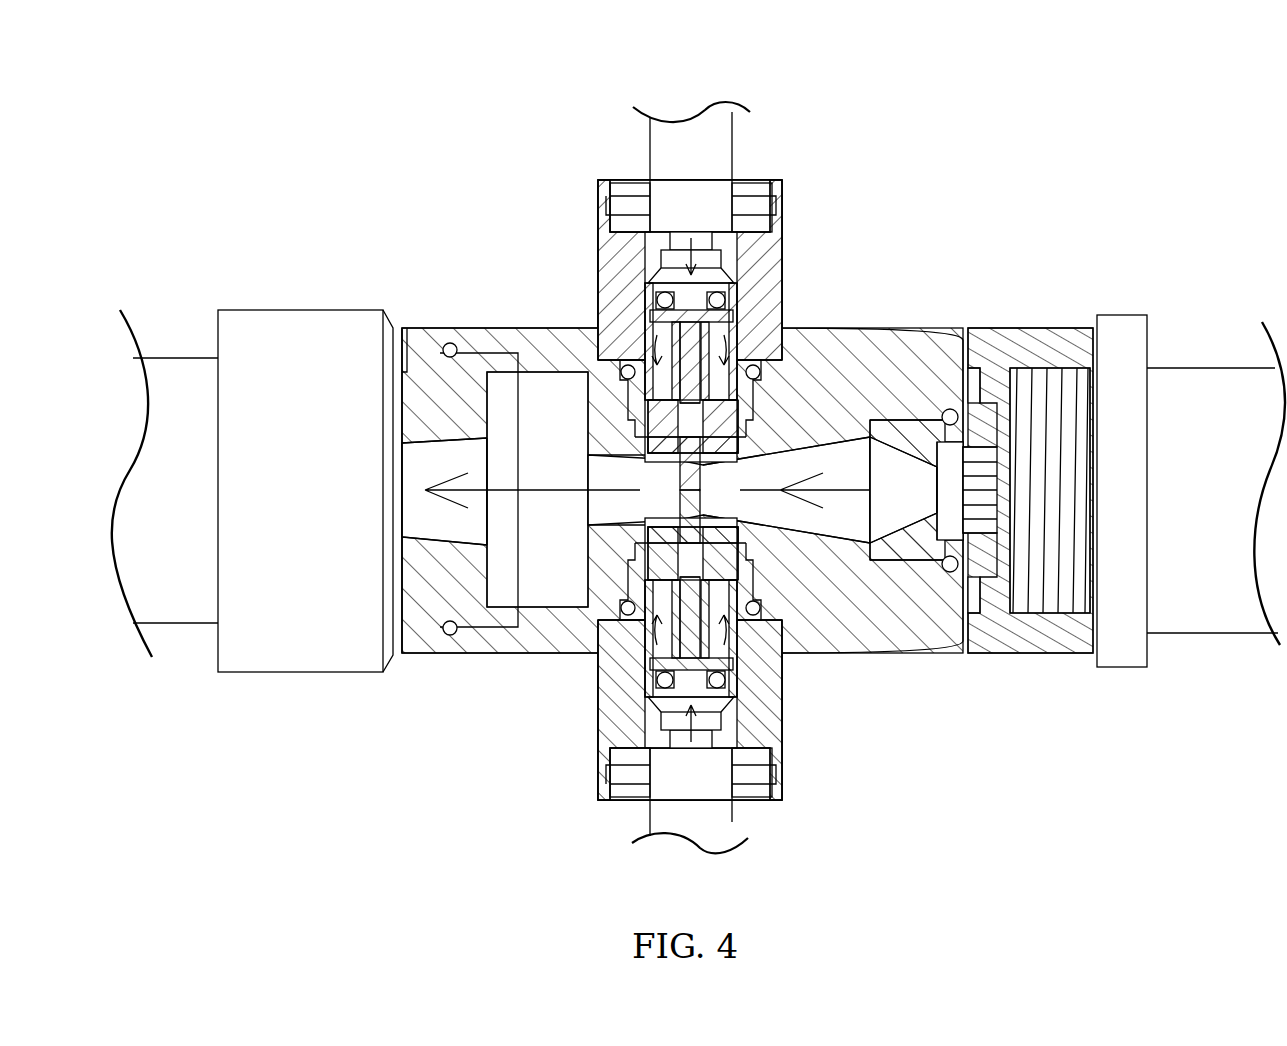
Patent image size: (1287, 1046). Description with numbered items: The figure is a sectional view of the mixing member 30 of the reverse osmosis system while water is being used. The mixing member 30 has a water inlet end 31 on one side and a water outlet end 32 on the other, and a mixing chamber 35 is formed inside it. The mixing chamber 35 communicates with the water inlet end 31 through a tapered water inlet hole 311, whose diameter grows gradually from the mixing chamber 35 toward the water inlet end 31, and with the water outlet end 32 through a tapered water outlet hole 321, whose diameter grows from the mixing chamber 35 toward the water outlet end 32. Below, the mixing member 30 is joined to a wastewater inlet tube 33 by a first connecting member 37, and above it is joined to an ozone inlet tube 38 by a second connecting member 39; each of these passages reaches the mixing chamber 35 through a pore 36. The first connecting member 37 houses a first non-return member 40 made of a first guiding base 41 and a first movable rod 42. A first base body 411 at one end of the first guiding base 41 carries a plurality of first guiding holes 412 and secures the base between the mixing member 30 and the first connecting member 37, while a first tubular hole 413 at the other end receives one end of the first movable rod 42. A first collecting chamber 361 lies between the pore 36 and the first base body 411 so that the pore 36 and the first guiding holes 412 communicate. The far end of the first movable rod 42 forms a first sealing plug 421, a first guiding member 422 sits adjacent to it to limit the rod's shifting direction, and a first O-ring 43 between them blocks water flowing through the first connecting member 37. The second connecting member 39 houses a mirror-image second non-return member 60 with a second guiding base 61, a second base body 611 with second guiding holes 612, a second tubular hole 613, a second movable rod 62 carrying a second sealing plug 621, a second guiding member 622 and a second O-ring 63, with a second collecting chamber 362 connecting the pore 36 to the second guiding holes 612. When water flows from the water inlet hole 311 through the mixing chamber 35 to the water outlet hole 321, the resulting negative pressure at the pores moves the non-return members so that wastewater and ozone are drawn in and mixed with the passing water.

The mixing member 30 is at (456, 672).
The water inlet end 31 is at (1132, 645).
The tapered water inlet hole 311 is at (985, 600).
The water outlet end 32 is at (252, 640).
The tapered water outlet hole 321 is at (560, 520).
The wastewater inlet tube 33 is at (737, 822).
The mixing chamber 35 is at (485, 335).
The pore 36 is at (600, 600).
The first collecting chamber 361 is at (850, 560).
The second collecting chamber 362 is at (890, 422).
The first connecting member 37 is at (772, 800).
The ozone inlet tube 38 is at (732, 147).
The second connecting member 39 is at (765, 180).
The first non-return member 40 is at (750, 640).
The first guiding base 41 is at (765, 700).
The first base body 411 is at (620, 590).
The first guiding holes 412 is at (790, 590).
The first tubular hole 413 is at (765, 600).
The first movable rod 42 is at (640, 585).
The first sealing plug 421 is at (660, 700).
The first guiding member 422 is at (650, 660).
The first O-ring 43 is at (680, 720).
The second non-return member 60 is at (783, 290).
The second guiding base 61 is at (797, 322).
The second base body 611 is at (628, 380).
The second guiding holes 612 is at (765, 400).
The second tubular hole 613 is at (758, 372).
The second movable rod 62 is at (665, 415).
The second sealing plug 621 is at (678, 287).
The second guiding member 622 is at (653, 317).
The second O-ring 63 is at (655, 305).